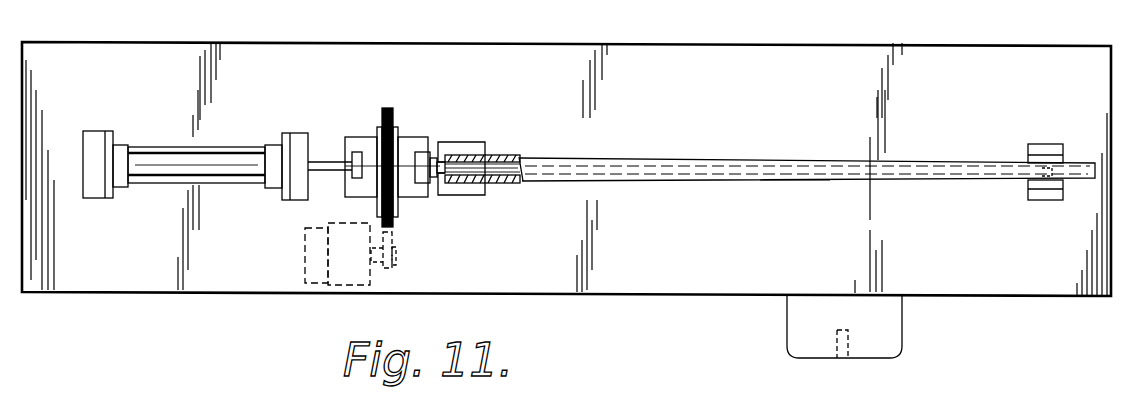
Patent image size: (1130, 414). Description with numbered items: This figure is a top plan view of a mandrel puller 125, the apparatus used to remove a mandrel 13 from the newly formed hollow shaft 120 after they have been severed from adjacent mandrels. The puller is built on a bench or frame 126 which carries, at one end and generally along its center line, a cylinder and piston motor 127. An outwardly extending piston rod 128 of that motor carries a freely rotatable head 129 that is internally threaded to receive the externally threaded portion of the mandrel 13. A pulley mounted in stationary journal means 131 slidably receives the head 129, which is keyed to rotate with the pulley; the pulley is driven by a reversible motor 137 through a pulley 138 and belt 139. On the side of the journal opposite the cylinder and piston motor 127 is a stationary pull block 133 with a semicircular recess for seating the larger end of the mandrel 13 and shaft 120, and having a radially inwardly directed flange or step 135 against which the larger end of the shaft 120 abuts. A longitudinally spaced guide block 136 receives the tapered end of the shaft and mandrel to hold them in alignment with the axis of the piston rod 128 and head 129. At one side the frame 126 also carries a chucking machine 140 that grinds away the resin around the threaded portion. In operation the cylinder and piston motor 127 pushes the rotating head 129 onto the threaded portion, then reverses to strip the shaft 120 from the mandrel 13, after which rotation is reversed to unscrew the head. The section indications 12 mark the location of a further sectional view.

The bench or frame 126 is at (732, 55).
The cylinder and piston motor 127 is at (192, 163).
The piston rod 128 is at (312, 167).
The stationary journal means 131 is at (365, 142).
The belt 139 is at (395, 222).
The freely rotatable head 129 is at (427, 160).
The stationary pull block 133 is at (462, 196).
The flange or step 135 is at (447, 160).
The mandrel 13 is at (723, 165).
The hollow shaft 120 is at (787, 180).
The guide block 136 is at (1040, 148).
The section indication 12 is at (319, 169).
The pulley 138 is at (397, 262).
The reversible motor 137 is at (345, 290).
The mandrel puller 125 is at (726, 304).
The chucking machine 140 is at (802, 350).